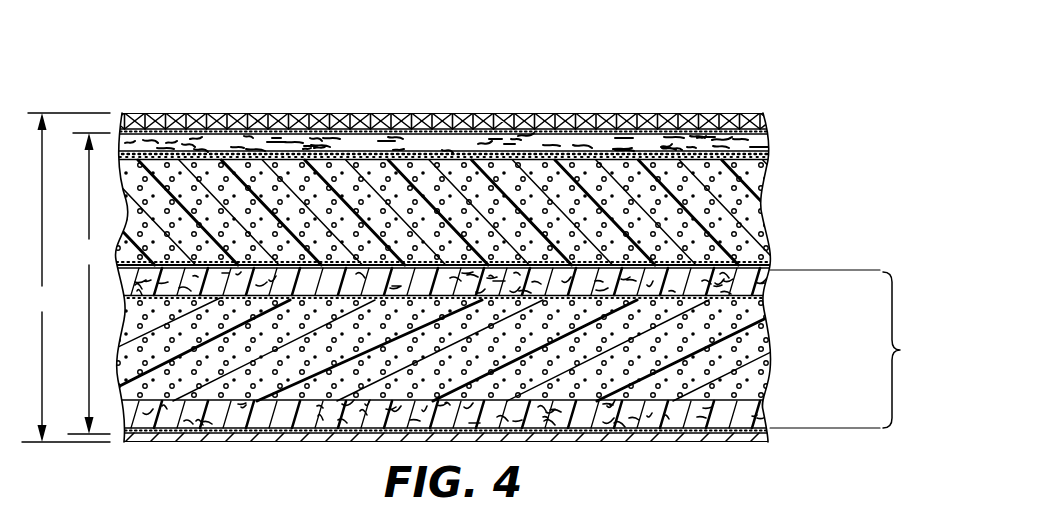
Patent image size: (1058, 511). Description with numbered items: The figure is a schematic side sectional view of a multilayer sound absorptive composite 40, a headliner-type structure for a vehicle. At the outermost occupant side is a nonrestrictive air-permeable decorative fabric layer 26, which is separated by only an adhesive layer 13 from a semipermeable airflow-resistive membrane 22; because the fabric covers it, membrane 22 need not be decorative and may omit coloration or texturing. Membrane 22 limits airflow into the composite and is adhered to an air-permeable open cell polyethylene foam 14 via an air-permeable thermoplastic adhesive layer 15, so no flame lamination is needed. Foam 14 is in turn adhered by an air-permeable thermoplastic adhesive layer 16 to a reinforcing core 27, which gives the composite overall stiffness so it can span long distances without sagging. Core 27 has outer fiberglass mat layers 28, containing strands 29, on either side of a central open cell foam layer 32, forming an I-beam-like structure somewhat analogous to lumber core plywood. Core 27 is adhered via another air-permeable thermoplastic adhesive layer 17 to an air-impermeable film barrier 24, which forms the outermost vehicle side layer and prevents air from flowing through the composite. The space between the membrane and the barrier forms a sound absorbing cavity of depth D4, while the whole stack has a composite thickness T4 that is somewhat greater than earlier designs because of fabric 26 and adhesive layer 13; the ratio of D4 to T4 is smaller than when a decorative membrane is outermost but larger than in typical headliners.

The multilayer sound absorptive composite 40 is at (674, 70).
The nonrestrictive air-permeable decorative fabric layer 26 is at (766, 127).
The adhesive layer 13 is at (770, 128).
The semipermeable airflow-resistive membrane 22 is at (770, 145).
The air-permeable thermoplastic adhesive layer 15 is at (770, 157).
The air-permeable open cell polyethylene foam 14 is at (766, 216).
The air-permeable thermoplastic adhesive layer 16 is at (770, 268).
The strands 29 is at (770, 283).
The outer fiberglass mat layers 28 is at (770, 290).
The central open cell foam layer 32 is at (758, 380).
The air-permeable thermoplastic adhesive layer 17 is at (770, 431).
The air-impermeable film barrier 24 is at (766, 438).
The reinforcing core 27 is at (851, 349).
The composite thickness T4 is at (66, 277).
The cavity depth D4 is at (89, 283).